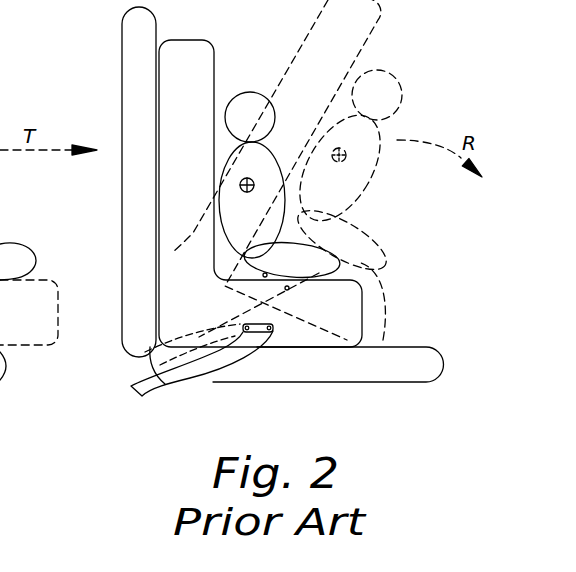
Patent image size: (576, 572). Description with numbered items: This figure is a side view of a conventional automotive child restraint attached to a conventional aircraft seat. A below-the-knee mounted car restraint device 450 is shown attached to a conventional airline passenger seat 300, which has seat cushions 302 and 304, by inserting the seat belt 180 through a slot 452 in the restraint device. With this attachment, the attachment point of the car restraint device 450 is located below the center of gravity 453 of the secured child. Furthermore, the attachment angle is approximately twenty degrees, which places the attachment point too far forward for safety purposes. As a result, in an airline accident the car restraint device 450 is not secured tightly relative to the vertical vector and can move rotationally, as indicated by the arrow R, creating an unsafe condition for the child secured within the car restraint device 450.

The seat belt 180 is at (222, 366).
The airline passenger seat 300 is at (227, 217).
The seat cushion 302 is at (137, 165).
The seat cushion 304 is at (272, 334).
The car restraint device 450 is at (400, 274).
The slot 452 is at (343, 362).
The center of gravity 453 is at (240, 187).